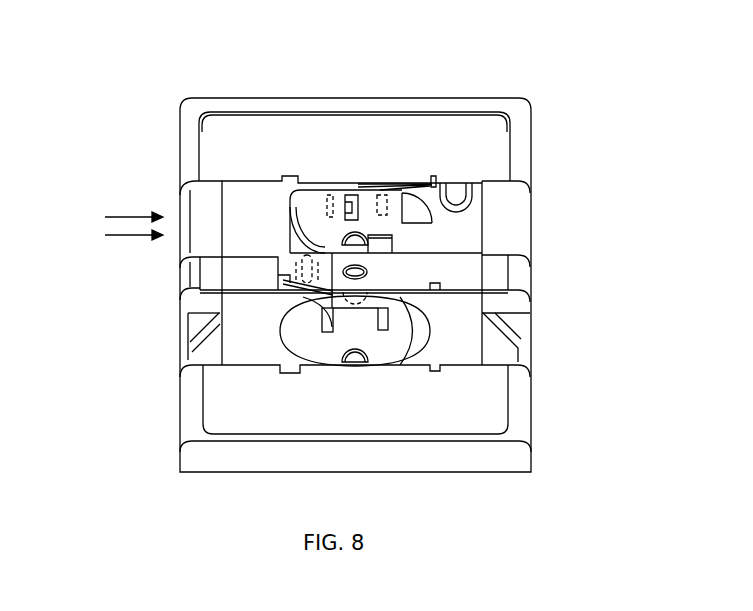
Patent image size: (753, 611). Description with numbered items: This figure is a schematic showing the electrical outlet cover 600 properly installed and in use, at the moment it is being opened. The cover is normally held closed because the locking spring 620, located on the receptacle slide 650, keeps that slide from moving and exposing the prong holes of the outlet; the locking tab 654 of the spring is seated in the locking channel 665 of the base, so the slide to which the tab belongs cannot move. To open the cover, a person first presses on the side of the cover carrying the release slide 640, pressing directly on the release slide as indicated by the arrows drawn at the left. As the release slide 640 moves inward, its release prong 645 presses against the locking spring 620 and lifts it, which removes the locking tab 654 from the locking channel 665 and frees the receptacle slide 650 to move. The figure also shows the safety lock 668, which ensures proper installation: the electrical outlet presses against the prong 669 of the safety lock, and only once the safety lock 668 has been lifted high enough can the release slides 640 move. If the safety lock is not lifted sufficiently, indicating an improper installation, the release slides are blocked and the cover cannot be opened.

The outlet cover 600 is at (165, 73).
The locking spring 620 is at (448, 183).
The release slide 640 is at (198, 240).
The release prong 645 is at (338, 186).
The receptacle slide 650 is at (508, 228).
The locking tab 654 is at (434, 182).
The locking channel 665 is at (433, 180).
The safety lock 668 is at (300, 265).
The prong 669 is at (290, 270).